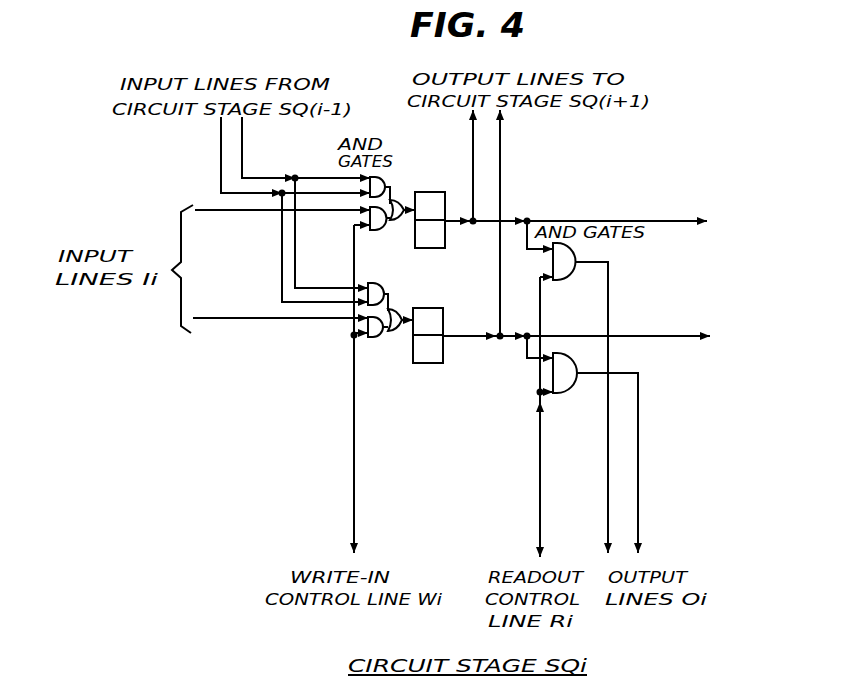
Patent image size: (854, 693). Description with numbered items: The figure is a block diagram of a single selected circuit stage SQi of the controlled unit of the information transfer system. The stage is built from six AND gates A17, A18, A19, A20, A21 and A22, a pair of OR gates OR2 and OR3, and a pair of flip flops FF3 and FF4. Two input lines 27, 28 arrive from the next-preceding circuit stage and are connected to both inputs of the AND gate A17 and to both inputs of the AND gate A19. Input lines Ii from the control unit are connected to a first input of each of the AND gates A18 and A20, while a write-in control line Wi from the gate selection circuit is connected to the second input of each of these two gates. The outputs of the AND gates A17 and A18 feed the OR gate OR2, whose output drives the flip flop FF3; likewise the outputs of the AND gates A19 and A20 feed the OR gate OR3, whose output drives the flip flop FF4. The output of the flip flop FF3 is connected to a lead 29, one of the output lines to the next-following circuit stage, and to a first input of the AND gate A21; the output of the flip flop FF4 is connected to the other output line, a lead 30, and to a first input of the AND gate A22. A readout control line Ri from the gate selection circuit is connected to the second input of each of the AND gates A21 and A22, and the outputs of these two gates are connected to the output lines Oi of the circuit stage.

The input line 27 is at (221, 149).
The input line 28 is at (242, 149).
The lead 29 is at (687, 217).
The lead 30 is at (682, 332).
The AND gate A17 is at (386, 181).
The AND gate A18 is at (357, 218).
The AND gate A19 is at (383, 289).
The AND gate A20 is at (378, 338).
The AND gate A21 is at (567, 280).
The AND gate A22 is at (562, 393).
The OR gate OR2 is at (393, 221).
The OR gate OR3 is at (395, 332).
The flip flop FF3 is at (442, 195).
The flip flop FF4 is at (427, 313).